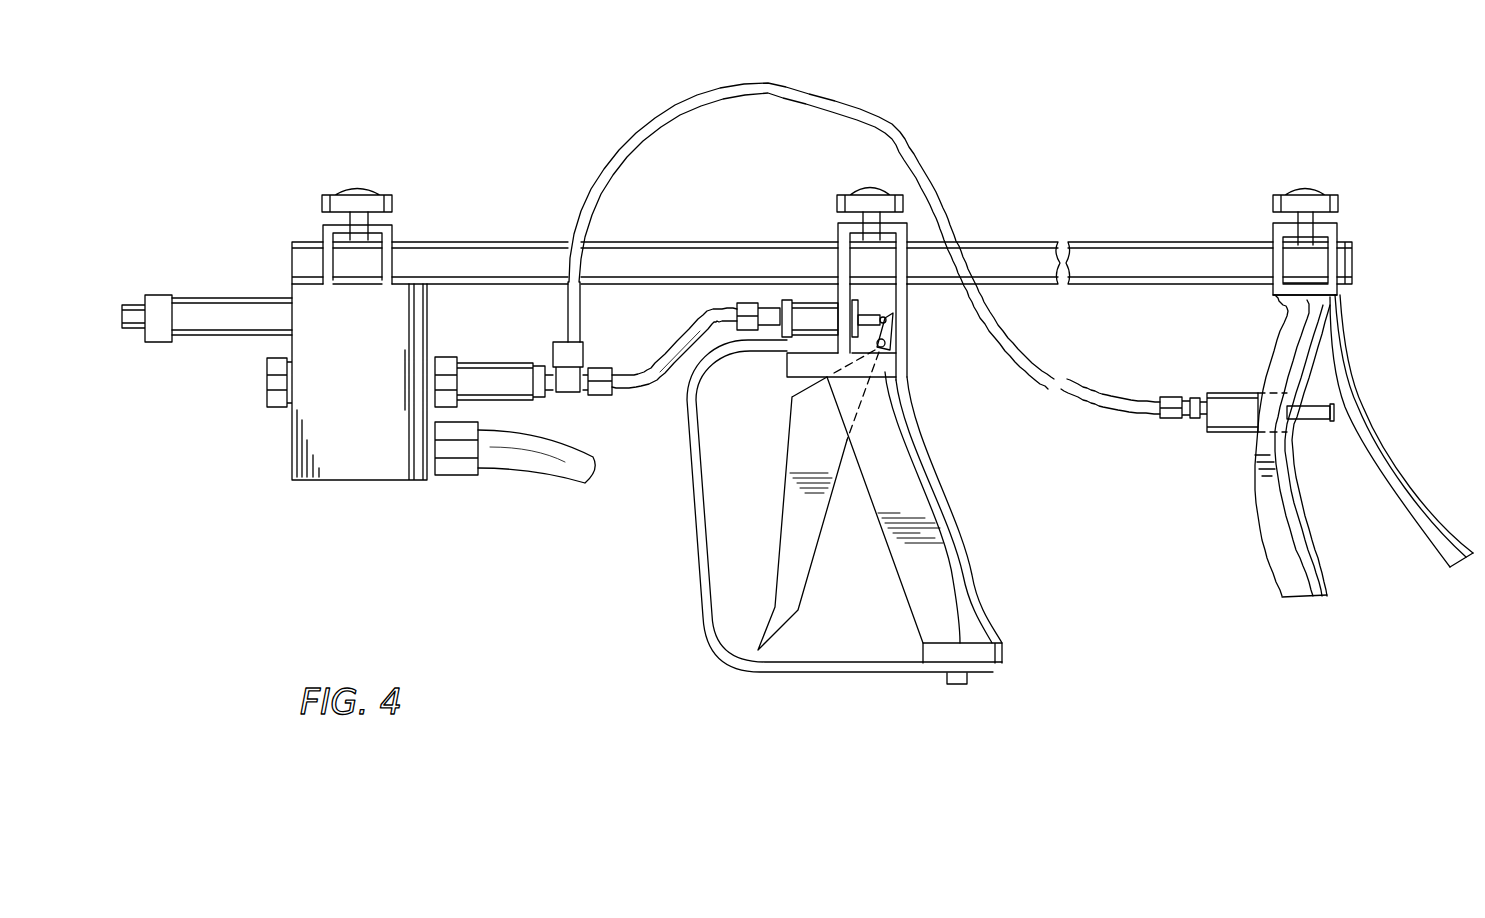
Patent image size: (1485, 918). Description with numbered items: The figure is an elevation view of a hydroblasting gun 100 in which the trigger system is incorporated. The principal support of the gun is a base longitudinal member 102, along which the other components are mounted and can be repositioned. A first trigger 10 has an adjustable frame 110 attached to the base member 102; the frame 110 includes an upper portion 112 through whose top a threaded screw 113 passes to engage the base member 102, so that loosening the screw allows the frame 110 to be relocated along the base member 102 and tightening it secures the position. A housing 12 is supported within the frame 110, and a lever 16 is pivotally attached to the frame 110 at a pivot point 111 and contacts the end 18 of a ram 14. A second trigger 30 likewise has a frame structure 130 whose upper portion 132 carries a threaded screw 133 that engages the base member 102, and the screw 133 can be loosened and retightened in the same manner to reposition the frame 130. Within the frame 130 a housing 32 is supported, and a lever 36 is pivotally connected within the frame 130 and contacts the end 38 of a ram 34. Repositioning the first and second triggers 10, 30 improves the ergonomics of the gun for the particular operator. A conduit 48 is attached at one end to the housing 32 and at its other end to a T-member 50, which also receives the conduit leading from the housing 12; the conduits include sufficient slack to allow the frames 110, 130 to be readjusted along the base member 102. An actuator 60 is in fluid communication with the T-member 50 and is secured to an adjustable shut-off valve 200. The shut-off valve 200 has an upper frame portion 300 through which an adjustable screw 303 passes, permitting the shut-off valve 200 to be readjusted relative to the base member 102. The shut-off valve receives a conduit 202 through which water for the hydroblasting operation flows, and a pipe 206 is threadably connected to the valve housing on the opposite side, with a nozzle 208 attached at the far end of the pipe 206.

The first trigger 10 is at (960, 460).
The housing 12 is at (795, 300).
The ram 14 is at (868, 312).
The lever 16 is at (793, 452).
The end of ram 18 is at (886, 318).
The second trigger 30 is at (1380, 350).
The housing 32 is at (1235, 393).
The ram 34 is at (1322, 421).
The lever 36 is at (1387, 463).
The end of ram 38 is at (1336, 412).
The conduit 48 is at (757, 82).
The T-member 50 is at (574, 396).
The actuator 60 is at (483, 356).
The hydroblasting gun 100 is at (950, 134).
The base longitudinal member 102 is at (1022, 250).
The adjustable frame 110 is at (908, 347).
The pivot point 111 is at (886, 351).
The upper portion 112 is at (842, 231).
The threaded screw 113 is at (868, 186).
The frame structure 130 is at (1338, 297).
The upper portion 132 is at (1333, 232).
The threaded screw 133 is at (1305, 187).
The adjustable shut-off valve 200 is at (358, 462).
The conduit 202 is at (550, 462).
The pipe 206 is at (228, 300).
The nozzle 208 is at (158, 293).
The upper frame portion 300 is at (392, 228).
The adjustable screw 303 is at (356, 188).